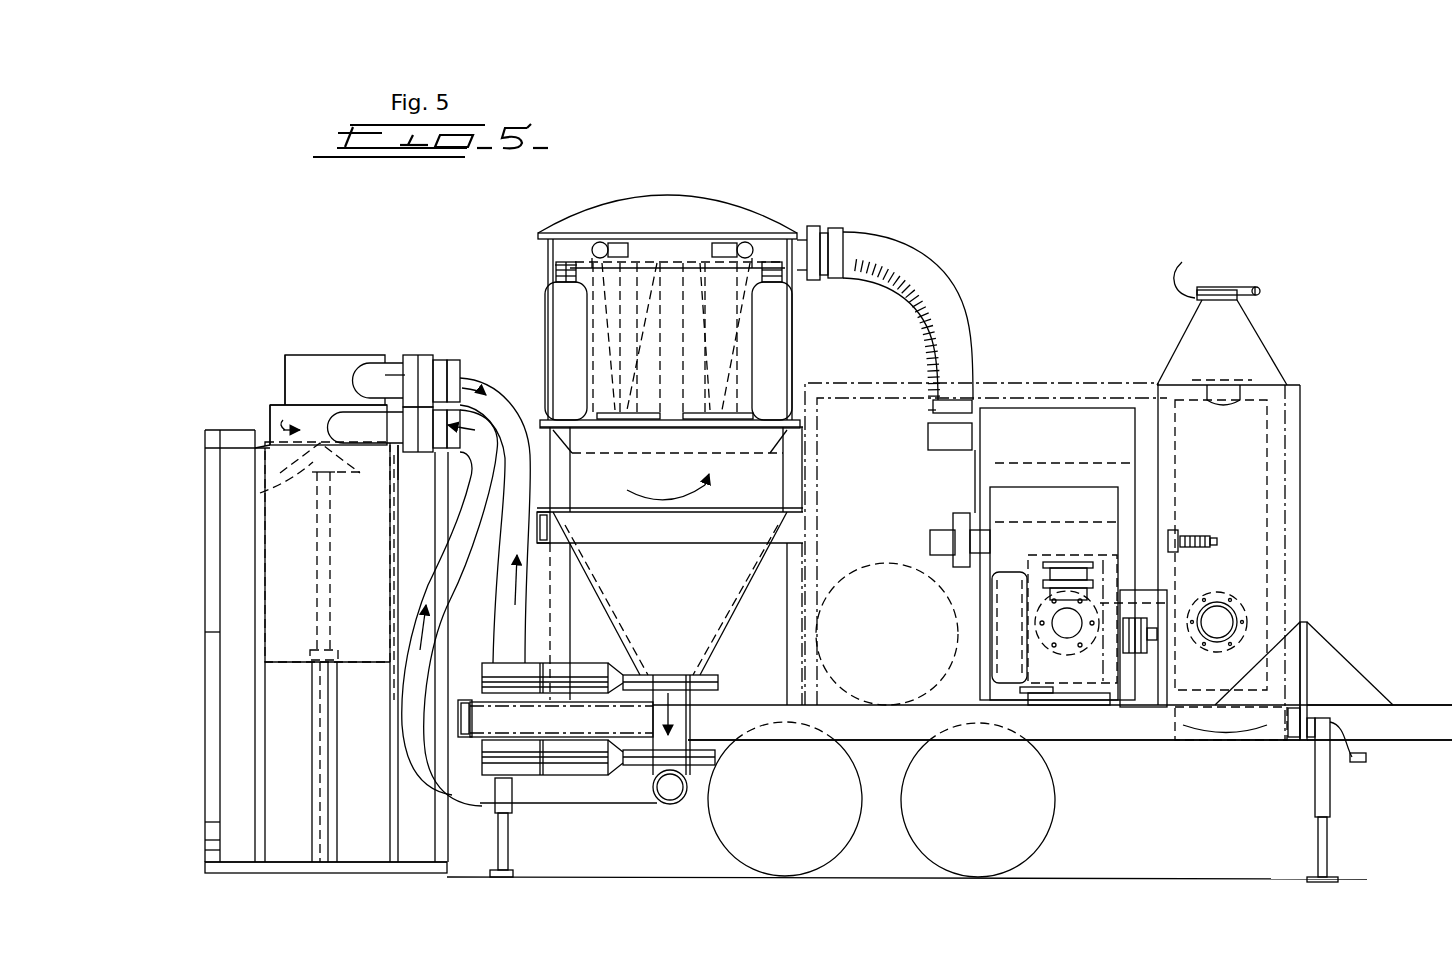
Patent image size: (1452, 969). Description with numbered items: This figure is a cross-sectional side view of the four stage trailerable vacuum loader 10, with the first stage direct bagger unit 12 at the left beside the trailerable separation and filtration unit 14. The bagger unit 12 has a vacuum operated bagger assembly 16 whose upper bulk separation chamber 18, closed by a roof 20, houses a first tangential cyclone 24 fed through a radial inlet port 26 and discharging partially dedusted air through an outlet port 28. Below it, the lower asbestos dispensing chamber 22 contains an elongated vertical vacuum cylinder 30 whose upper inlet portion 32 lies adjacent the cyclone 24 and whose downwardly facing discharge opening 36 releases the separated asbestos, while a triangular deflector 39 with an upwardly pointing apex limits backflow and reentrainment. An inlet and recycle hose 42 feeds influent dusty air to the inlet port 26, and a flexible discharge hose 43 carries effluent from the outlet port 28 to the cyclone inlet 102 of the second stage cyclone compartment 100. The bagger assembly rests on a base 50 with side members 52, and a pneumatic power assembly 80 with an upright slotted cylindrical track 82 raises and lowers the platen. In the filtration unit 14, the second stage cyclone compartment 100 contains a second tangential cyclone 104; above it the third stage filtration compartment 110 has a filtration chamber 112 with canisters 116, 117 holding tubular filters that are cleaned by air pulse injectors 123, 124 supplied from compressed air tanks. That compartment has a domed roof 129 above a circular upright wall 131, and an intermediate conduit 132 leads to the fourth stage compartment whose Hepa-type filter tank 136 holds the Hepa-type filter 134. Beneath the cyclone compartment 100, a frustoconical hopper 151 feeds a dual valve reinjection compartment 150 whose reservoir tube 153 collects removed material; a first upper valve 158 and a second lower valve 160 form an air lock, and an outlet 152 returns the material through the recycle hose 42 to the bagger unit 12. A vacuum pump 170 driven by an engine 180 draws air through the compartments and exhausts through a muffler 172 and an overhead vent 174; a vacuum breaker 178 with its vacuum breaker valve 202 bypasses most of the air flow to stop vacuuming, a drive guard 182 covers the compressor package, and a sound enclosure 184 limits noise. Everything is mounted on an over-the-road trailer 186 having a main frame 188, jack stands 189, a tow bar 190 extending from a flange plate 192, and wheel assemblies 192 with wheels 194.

The vacuum loader 10 is at (481, 268).
The direct bagger unit 12 is at (236, 348).
The separation and filtration unit 14 is at (1052, 305).
The vacuum operated bagger assembly 16 is at (283, 402).
The upper bulk separation chamber 18 is at (283, 397).
The roof 20 is at (320, 357).
The lower asbestos dispensing chamber 22 is at (270, 437).
The first centrifugal cyclone 24 is at (305, 408).
The radial inlet port 26 is at (380, 447).
The outlet port 28 is at (385, 363).
The vacuum cylinder 30 is at (395, 452).
The upper inlet portion 32 is at (283, 456).
The discharge opening 36 is at (283, 665).
The deflector 39 is at (287, 480).
The inlet and recycle hose 42 is at (420, 600).
The outlet discharge hose 43 is at (488, 378).
The support base 50 is at (228, 874).
The side member 52 is at (372, 866).
The pneumatic power assembly 80 is at (320, 773).
The slotted cylindrical track 82 is at (317, 648).
The second stage cyclone compartment 100 is at (785, 480).
The cyclone inlet 102 is at (537, 423).
The second centrifugal cyclone 104 is at (790, 508).
The third stage filtration compartment 110 is at (795, 280).
The filtration chamber 112 is at (670, 275).
The canister 116 is at (742, 360).
The canister 117 is at (660, 425).
The air pulse injector 123 is at (740, 250).
The air pulse injector 124 is at (600, 233).
The domed roof 129 is at (662, 195).
The circular upright wall 131 is at (562, 272).
The intermediate conduit 132 is at (897, 240).
The Hepa-type filter 134 is at (1098, 688).
The Hepa-type filter tank 136 is at (1156, 438).
The dual valve reinjection compartment 150 is at (705, 728).
The frustoconical hopper 151 is at (720, 627).
The outlet 152 is at (673, 805).
The reservoir tube 153 is at (660, 713).
The first upper valve 158 is at (718, 683).
The second lower valve 160 is at (718, 760).
The vacuum pump 170 is at (1085, 565).
The exhaust silencer 172 is at (1265, 385).
The overhead vent 174 is at (1217, 272).
The vacuum breaker 178 is at (1140, 470).
The engine 180 is at (1120, 577).
The drive guard 182 is at (1165, 595).
The sound enclosure 184 is at (1300, 470).
The trailer 186 is at (1183, 735).
The main frame 188 is at (1330, 805).
The jack stands 189 is at (880, 740).
The tow bar 190 is at (1407, 705).
The flange plate 192 is at (840, 853).
The wheels 194 is at (1010, 860).
The vacuum breaker valve 202 is at (1200, 540).